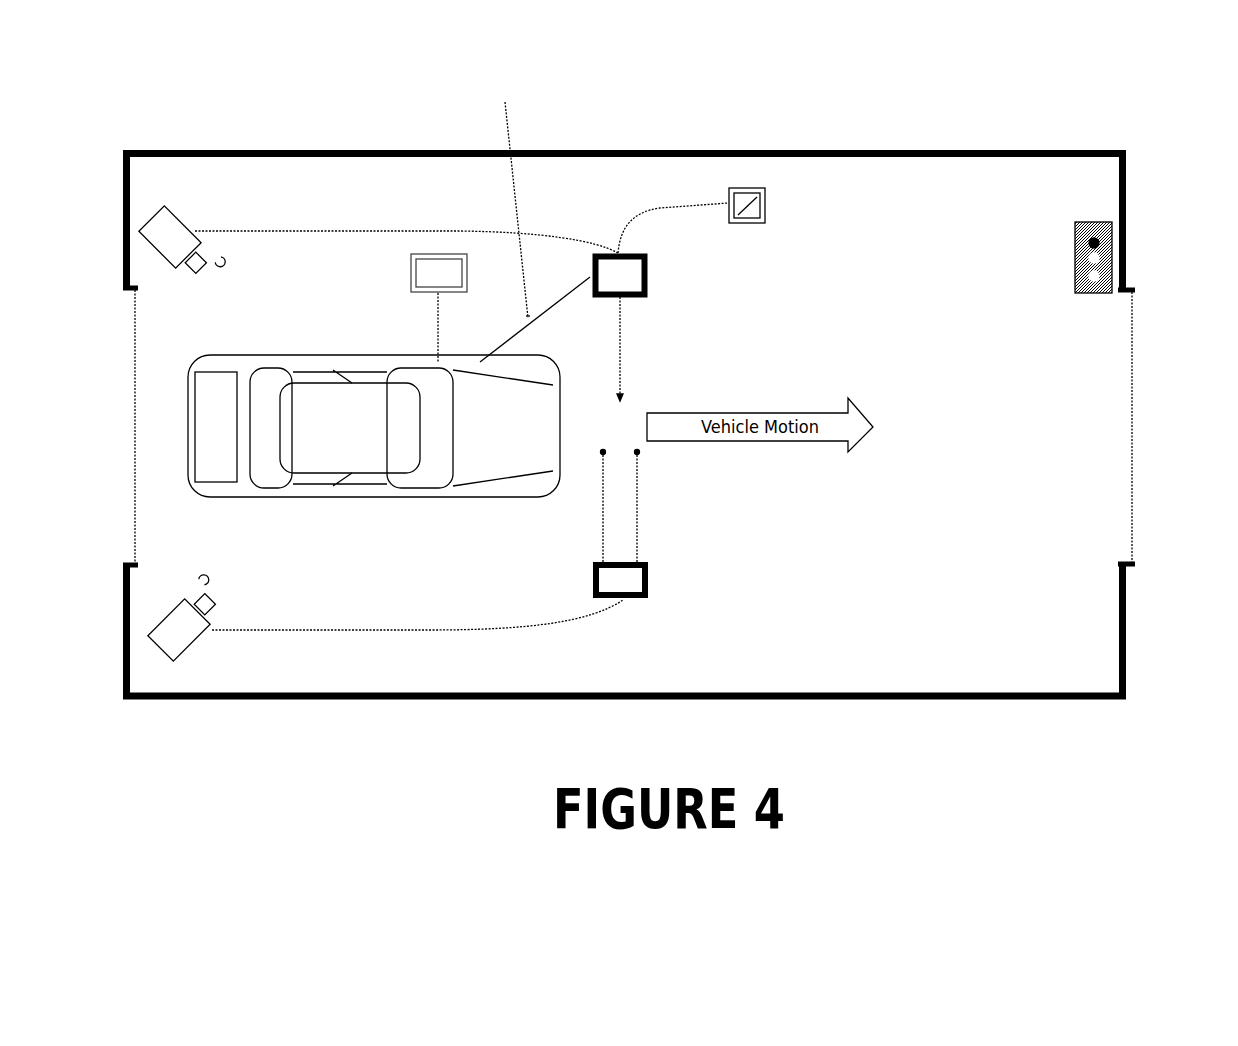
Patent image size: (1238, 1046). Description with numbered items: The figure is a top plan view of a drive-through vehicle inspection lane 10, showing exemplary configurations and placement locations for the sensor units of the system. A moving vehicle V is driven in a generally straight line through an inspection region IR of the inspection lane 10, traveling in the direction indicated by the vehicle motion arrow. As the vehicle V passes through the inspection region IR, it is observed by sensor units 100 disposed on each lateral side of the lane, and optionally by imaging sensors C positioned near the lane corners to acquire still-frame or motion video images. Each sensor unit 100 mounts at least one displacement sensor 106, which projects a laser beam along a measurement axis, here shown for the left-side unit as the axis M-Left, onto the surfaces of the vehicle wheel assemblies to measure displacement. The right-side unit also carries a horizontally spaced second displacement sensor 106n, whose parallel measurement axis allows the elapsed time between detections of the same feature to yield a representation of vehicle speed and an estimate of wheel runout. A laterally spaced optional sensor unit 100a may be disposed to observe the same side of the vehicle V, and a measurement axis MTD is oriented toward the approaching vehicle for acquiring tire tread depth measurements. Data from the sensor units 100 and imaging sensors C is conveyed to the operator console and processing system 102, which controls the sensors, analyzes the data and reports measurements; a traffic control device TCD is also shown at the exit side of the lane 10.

The inspection lane 10 is at (973, 707).
The sensor unit 100 is at (770, 743).
The separate sensor unit 100a is at (410, 275).
The processing system 102 is at (745, 188).
The displacement sensor 106 is at (612, 480).
The second displacement sensor 106n is at (635, 503).
The imaging sensor C is at (182, 218).
The moving vehicle V is at (333, 432).
The inspection region IR is at (372, 567).
The measurement axis for tread depth MTD is at (462, 196).
The measurement axis M-Left is at (620, 328).
The traffic control device TCD is at (1068, 252).